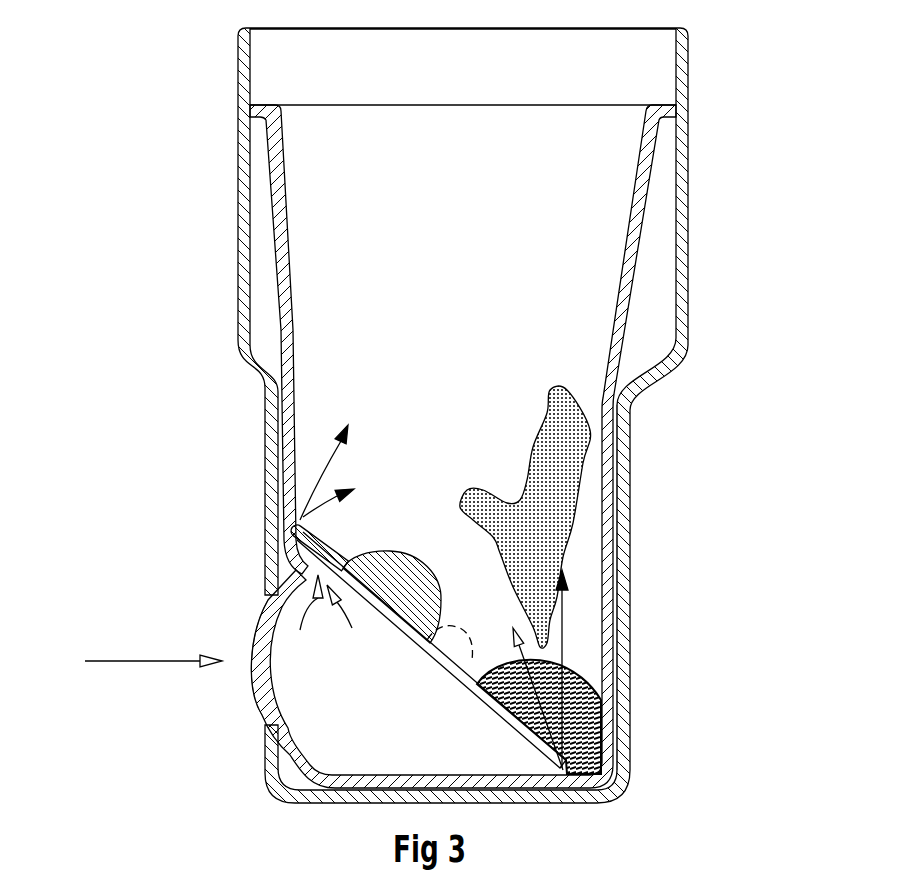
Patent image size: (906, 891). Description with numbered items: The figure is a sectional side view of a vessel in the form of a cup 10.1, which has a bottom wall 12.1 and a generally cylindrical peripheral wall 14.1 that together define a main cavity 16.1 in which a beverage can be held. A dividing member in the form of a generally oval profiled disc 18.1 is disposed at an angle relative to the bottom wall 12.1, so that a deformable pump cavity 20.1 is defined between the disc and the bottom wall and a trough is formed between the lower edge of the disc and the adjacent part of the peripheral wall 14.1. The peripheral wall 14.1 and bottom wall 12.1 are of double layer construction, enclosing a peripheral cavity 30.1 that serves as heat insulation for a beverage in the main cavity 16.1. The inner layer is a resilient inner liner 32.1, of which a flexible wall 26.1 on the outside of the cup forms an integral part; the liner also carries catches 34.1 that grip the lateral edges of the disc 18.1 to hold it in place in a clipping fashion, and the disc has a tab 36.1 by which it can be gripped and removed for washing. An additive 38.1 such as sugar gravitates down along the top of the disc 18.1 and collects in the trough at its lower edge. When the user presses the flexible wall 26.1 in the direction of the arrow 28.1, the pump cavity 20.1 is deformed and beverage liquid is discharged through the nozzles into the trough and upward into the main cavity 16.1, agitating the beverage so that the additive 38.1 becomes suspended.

The cup 10.1 is at (121, 114).
The bottom wall 12.1 is at (358, 798).
The peripheral wall 14.1 is at (630, 422).
The main cavity 16.1 is at (470, 262).
The disc 18.1 is at (543, 755).
The pump cavity 20.1 is at (400, 712).
The flexible wall 26.1 is at (260, 680).
The pressing direction arrow 28.1 is at (143, 660).
The peripheral cavity 30.1 is at (652, 277).
The inner liner 32.1 is at (612, 495).
The catches 34.1 is at (470, 662).
The tab 36.1 is at (377, 570).
The additive 38.1 is at (598, 740).